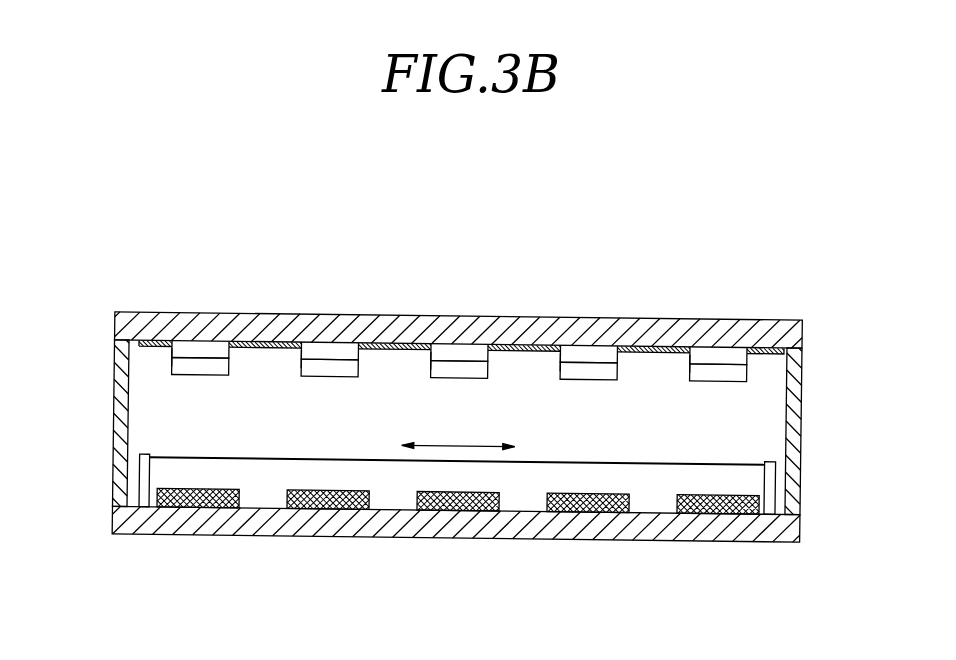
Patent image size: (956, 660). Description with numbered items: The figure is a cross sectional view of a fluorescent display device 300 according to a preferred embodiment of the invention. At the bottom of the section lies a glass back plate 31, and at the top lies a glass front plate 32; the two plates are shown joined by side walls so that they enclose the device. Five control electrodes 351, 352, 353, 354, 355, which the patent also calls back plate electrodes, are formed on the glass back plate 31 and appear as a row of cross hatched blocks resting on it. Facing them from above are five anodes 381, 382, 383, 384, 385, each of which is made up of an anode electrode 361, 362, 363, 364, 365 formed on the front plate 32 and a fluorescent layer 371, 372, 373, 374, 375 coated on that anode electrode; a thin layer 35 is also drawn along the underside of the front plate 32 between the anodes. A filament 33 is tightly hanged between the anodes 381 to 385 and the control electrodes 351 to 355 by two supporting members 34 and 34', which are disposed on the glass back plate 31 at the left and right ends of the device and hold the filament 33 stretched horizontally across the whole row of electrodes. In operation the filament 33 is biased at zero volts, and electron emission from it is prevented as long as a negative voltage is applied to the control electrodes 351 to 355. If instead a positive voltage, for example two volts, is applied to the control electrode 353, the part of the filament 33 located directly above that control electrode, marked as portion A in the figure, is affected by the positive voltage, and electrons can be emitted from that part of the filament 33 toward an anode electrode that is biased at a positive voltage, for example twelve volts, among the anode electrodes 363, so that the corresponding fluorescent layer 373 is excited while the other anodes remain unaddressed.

The fluorescent display device 300 is at (554, 170).
The glass back plate 31 is at (761, 526).
The glass front plate 32 is at (778, 321).
The filament 33 is at (748, 459).
The supporting member 34 is at (90, 480).
The supporting member 34' is at (813, 489).
The anode electrode layer 35 is at (157, 351).
The anode electrode 361 is at (183, 352).
The anode electrode 362 is at (312, 352).
The anode electrode 363 is at (442, 352).
The anode electrode 364 is at (572, 352).
The anode electrode 365 is at (701, 352).
The fluorescent layer 371 is at (219, 366).
The fluorescent layer 372 is at (348, 366).
The fluorescent layer 373 is at (478, 366).
The fluorescent layer 374 is at (608, 366).
The fluorescent layer 375 is at (737, 366).
The anode 381 is at (168, 362).
The anode 382 is at (298, 361).
The anode 383 is at (427, 361).
The anode 384 is at (556, 357).
The anode 385 is at (686, 357).
The control electrode 351 is at (194, 508).
The control electrode 352 is at (324, 508).
The control electrode 353 is at (454, 508).
The control electrode 354 is at (584, 508).
The control electrode 355 is at (714, 508).